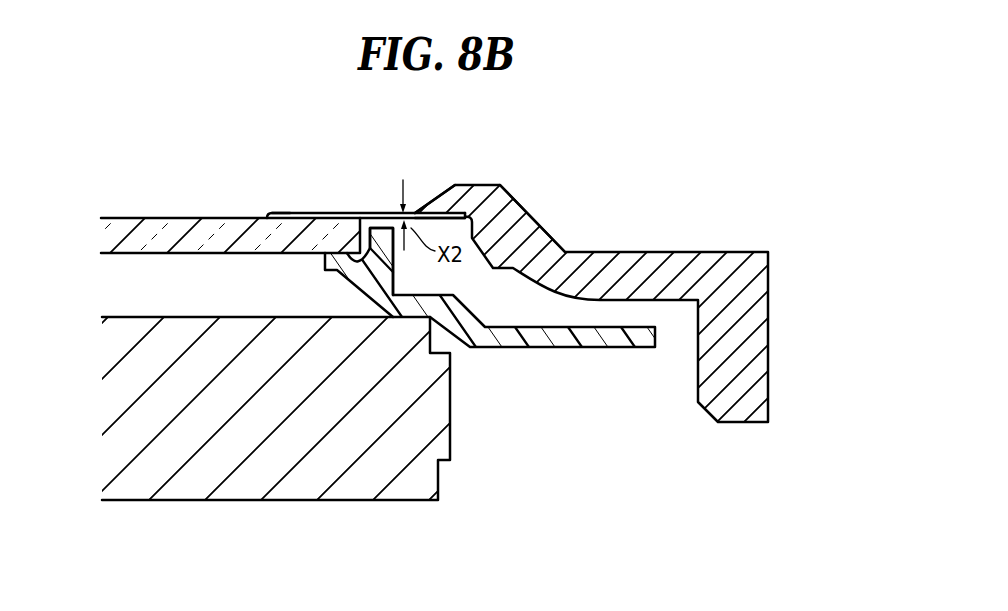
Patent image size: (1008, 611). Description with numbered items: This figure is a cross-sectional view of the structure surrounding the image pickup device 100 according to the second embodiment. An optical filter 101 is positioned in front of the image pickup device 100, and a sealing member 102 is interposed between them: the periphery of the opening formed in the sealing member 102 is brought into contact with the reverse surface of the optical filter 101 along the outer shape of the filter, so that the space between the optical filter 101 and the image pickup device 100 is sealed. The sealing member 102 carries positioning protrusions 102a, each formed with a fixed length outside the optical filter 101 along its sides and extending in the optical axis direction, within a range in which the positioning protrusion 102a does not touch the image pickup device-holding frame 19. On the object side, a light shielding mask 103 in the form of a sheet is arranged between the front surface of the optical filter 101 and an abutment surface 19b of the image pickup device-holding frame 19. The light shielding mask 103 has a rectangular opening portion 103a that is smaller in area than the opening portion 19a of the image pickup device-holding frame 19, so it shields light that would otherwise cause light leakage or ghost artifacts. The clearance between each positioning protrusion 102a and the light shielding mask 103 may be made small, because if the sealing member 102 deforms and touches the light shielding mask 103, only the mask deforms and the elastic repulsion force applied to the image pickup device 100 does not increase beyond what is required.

The image pickup device 100 is at (270, 452).
The optical filter 101 is at (170, 227).
The sealing member 102 is at (579, 347).
The positioning protrusion 102a is at (369, 228).
The light shielding mask 103 is at (320, 215).
The rectangular opening portion 103a is at (267, 216).
The image pickup device-holding frame 19 is at (674, 275).
The opening portion 19a is at (422, 213).
The abutment surface 19b is at (481, 222).